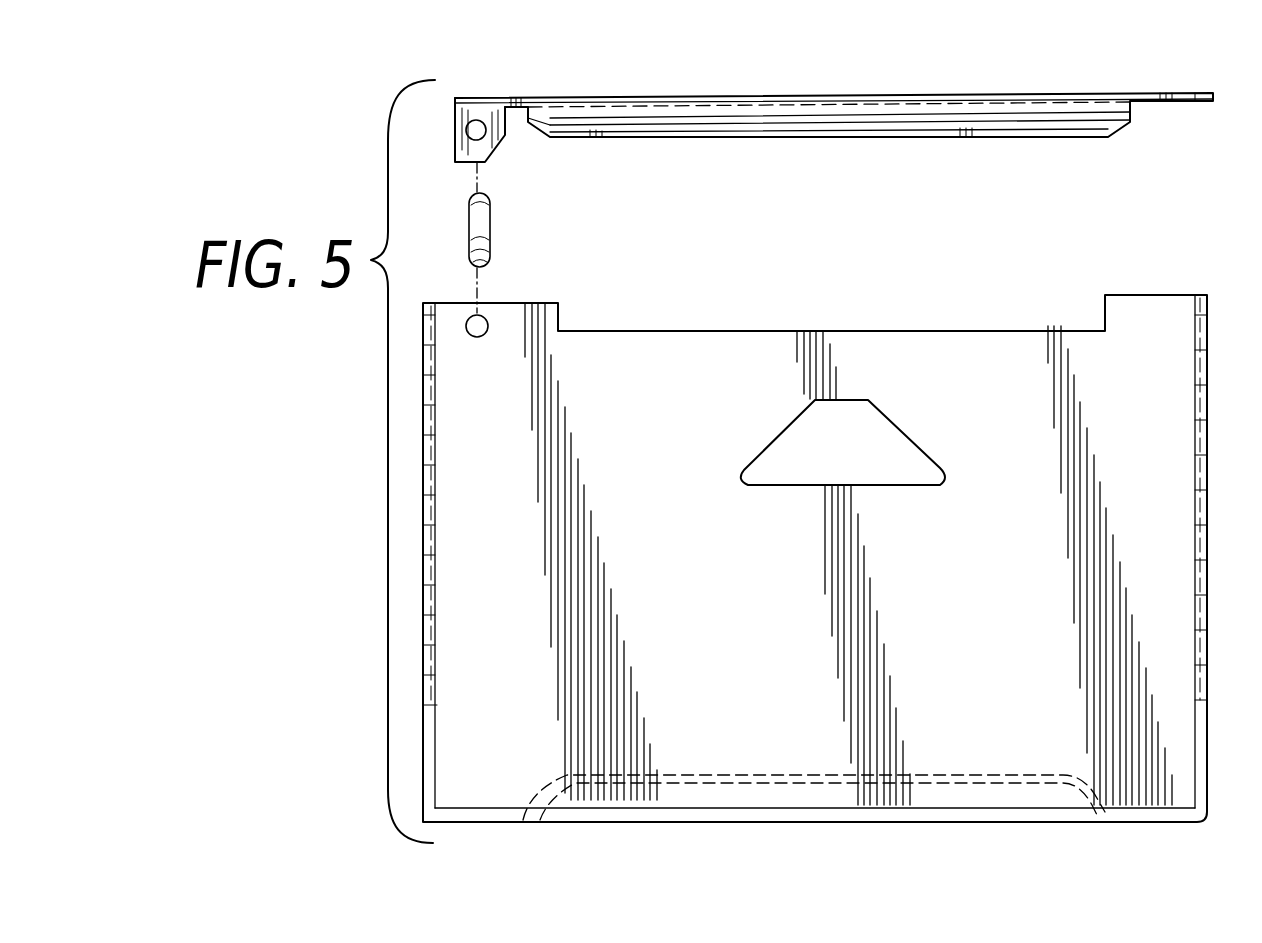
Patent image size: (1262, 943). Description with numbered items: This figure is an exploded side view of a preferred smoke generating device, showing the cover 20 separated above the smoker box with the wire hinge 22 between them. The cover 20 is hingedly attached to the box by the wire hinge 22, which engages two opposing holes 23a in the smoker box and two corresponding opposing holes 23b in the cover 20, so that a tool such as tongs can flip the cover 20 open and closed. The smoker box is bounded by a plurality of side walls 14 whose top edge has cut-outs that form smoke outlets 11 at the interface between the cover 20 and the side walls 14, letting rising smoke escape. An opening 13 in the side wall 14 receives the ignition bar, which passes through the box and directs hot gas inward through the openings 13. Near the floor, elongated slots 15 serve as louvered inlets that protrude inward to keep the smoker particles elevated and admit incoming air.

The smoke outlets 11 is at (758, 330).
The openings 13 is at (855, 454).
The side walls 14 is at (686, 545).
The elongated slots 15 is at (787, 793).
The cover 20 is at (812, 93).
The wire hinge 22 is at (485, 215).
The holes in the smoker box 23a is at (477, 325).
The holes in the cover 23b is at (477, 128).